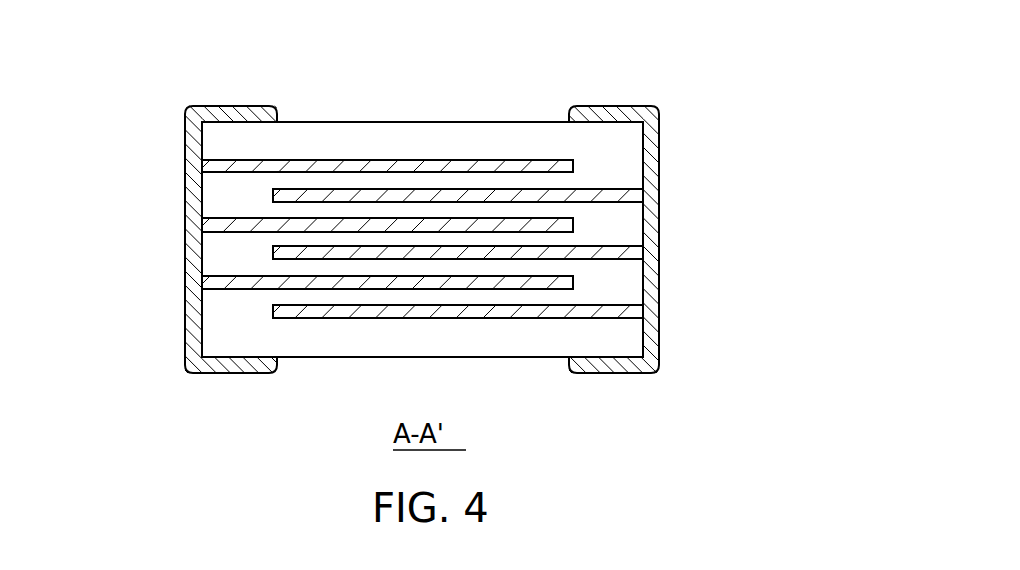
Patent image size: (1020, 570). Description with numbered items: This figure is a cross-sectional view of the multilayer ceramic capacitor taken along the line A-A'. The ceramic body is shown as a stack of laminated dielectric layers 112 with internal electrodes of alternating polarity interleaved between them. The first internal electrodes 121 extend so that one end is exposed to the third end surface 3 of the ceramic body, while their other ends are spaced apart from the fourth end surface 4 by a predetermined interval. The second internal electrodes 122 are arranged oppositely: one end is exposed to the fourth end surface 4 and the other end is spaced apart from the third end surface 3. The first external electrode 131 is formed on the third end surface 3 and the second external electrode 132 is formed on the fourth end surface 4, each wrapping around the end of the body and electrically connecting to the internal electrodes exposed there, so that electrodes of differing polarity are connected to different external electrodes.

The third end surface 3 is at (172, 300).
The fourth end surface 4 is at (672, 167).
The dielectric layer 112 is at (550, 237).
The first internal electrode 121 is at (245, 222).
The second internal electrode 122 is at (620, 257).
The first external electrode 131 is at (232, 110).
The second external electrode 132 is at (615, 108).